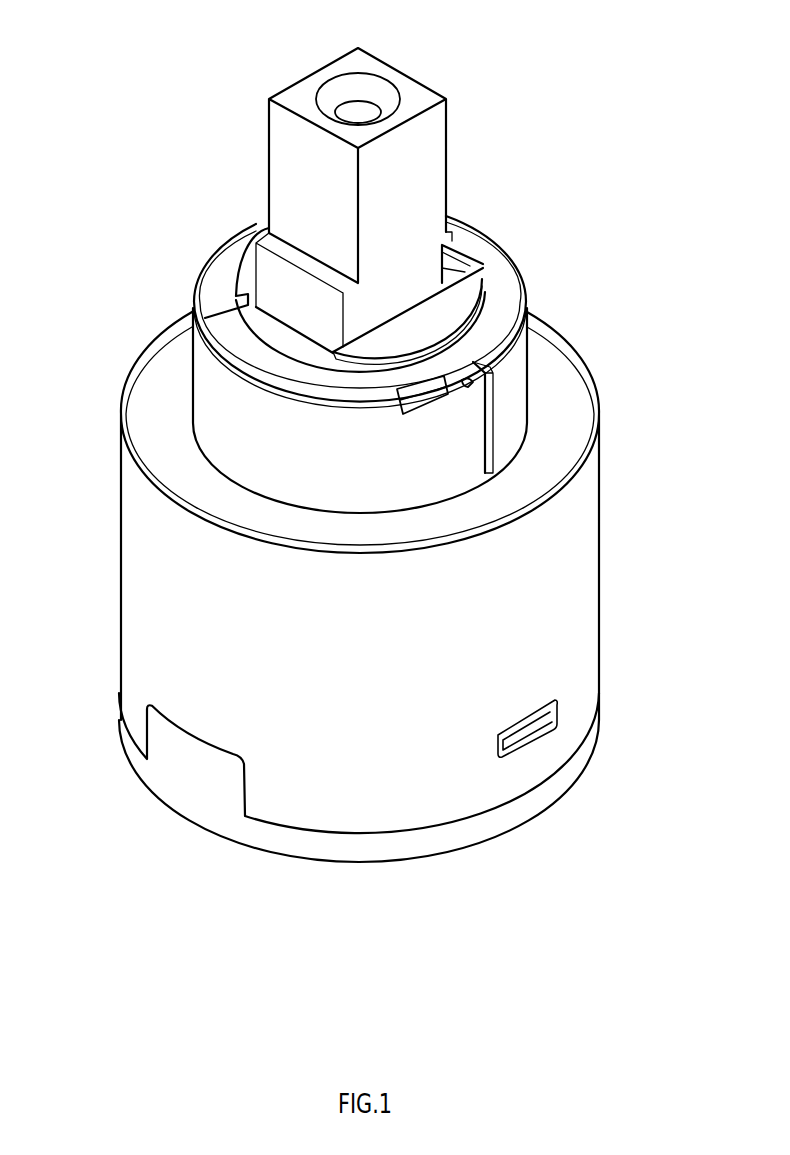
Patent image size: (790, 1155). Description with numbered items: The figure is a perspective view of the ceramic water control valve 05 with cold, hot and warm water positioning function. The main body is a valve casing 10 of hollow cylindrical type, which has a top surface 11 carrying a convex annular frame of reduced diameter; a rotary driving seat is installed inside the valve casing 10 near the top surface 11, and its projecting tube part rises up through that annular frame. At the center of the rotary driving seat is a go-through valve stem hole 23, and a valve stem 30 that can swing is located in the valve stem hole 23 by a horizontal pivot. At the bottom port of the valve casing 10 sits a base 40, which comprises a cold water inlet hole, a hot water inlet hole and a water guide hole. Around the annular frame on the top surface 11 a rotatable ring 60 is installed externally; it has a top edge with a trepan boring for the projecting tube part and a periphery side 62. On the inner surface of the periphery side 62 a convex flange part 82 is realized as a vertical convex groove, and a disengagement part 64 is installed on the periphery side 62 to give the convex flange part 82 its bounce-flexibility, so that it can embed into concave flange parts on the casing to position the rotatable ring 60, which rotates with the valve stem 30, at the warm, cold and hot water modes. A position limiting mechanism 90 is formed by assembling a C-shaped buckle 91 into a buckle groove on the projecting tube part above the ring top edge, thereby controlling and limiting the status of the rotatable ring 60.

The ceramic water control valve 05 is at (582, 87).
The valve casing 10 is at (578, 585).
The top surface 11 is at (556, 352).
The valve stem hole 23 is at (452, 263).
The valve stem 30 is at (300, 160).
The base 40 is at (254, 858).
The rotatable ring 60 is at (173, 407).
The periphery side 62 is at (200, 370).
The disengagement part 64 is at (490, 427).
The convex flange part 82 is at (462, 384).
The position limiting mechanism 90 is at (506, 229).
The C-shaped buckle 91 is at (498, 272).